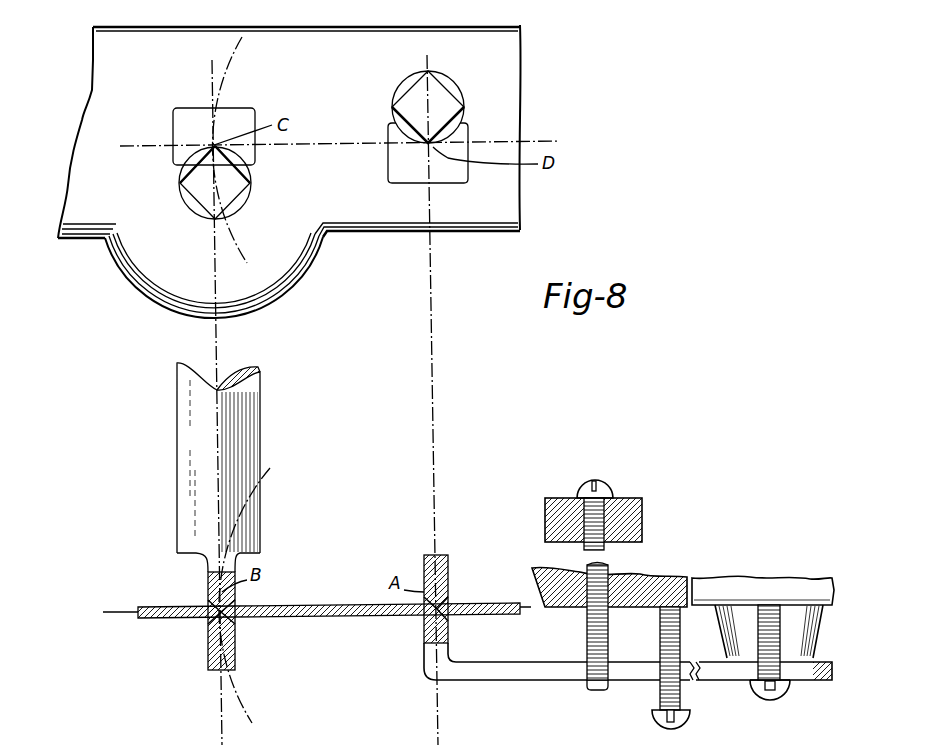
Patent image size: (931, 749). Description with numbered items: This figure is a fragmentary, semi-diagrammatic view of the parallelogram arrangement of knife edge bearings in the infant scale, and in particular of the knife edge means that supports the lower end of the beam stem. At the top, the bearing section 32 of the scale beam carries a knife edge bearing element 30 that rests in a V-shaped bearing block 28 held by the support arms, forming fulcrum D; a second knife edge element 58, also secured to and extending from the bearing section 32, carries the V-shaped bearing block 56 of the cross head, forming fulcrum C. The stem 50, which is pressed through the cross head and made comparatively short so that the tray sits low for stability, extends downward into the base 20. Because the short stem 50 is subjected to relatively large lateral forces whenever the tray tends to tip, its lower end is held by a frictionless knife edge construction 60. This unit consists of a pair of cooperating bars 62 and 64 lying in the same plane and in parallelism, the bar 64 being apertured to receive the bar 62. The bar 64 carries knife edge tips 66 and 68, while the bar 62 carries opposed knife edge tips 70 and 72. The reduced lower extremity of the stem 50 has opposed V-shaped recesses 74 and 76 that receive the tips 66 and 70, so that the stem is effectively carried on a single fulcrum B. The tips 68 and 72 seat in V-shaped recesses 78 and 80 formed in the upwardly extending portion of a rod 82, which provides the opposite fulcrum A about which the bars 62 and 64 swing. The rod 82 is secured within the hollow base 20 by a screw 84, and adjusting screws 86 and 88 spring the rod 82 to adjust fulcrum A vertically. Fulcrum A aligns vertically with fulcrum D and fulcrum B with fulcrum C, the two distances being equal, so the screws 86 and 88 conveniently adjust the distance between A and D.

The base 20 is at (642, 540).
The V-shaped bearing block 28 is at (462, 177).
The knife edge bearing element 30 is at (459, 92).
The bearing section 32 is at (457, 230).
The stem 50 is at (177, 423).
The V-shaped bearing block 56 is at (176, 120).
The knife edge element 58 is at (182, 185).
The knife edge construction 60 is at (329, 603).
The bar 62 is at (315, 619).
The bar 64 is at (162, 619).
The knife edge tip 66 is at (216, 610).
The knife edge tip 68 is at (448, 608).
The knife edge tip 70 is at (243, 602).
The knife edge tip 72 is at (425, 616).
The V-shaped recess 74 is at (206, 632).
The V-shaped recess 76 is at (233, 622).
The V-shaped recess 78 is at (450, 617).
The V-shaped recess 80 is at (425, 625).
The rod 82 is at (524, 680).
The screw 84 is at (762, 693).
The adjusting screw 86 is at (590, 692).
The adjusting screw 88 is at (663, 728).